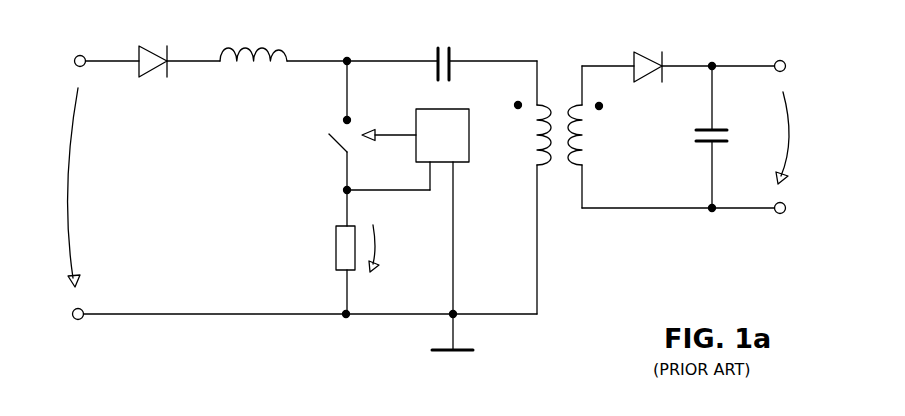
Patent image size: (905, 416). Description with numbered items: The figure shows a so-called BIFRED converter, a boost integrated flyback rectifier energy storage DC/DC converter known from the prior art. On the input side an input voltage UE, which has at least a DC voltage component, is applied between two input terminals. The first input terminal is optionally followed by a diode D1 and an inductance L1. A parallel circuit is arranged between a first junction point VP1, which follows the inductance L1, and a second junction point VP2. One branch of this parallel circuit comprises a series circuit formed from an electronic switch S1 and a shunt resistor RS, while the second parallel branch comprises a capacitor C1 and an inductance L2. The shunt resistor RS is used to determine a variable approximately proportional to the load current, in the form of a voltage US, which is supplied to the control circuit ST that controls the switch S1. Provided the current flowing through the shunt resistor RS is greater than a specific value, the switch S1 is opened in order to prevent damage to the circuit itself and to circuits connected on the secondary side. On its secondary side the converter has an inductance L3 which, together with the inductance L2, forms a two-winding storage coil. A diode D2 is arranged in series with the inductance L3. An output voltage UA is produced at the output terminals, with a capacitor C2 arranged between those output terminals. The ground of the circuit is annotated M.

The diode D1 is at (154, 44).
The inductance L1 is at (253, 35).
The first junction point VP1 is at (345, 43).
The capacitor C1 is at (445, 46).
The electronic switch S1 is at (330, 128).
The control circuit ST is at (415, 135).
The inductance L2 is at (524, 134).
The inductance L3 is at (596, 134).
The diode D2 is at (648, 48).
The capacitor C2 is at (730, 136).
The shunt resistor RS is at (325, 229).
The ground M is at (466, 262).
The second junction point VP2 is at (345, 334).
The input voltage UE is at (91, 187).
The output voltage UA is at (804, 138).
The voltage US is at (395, 248).